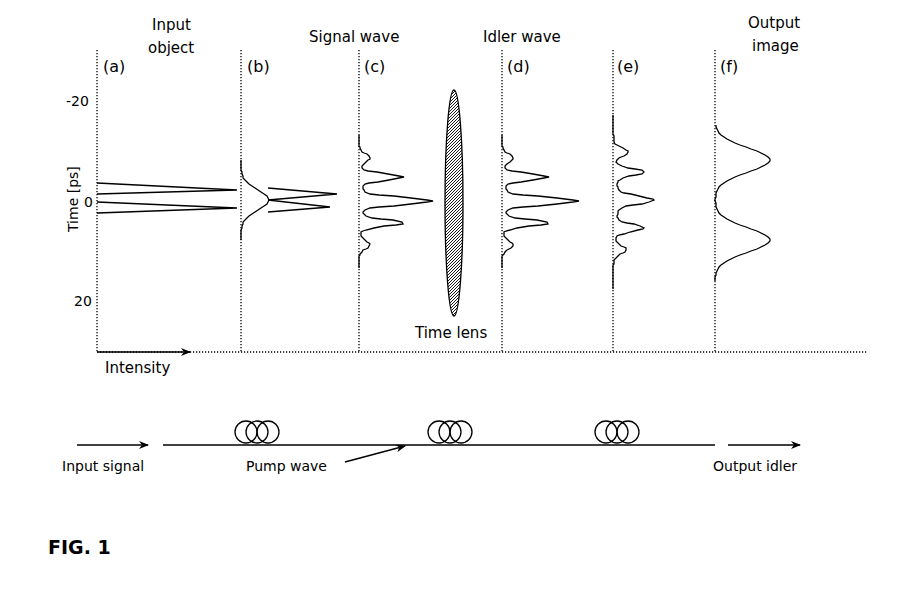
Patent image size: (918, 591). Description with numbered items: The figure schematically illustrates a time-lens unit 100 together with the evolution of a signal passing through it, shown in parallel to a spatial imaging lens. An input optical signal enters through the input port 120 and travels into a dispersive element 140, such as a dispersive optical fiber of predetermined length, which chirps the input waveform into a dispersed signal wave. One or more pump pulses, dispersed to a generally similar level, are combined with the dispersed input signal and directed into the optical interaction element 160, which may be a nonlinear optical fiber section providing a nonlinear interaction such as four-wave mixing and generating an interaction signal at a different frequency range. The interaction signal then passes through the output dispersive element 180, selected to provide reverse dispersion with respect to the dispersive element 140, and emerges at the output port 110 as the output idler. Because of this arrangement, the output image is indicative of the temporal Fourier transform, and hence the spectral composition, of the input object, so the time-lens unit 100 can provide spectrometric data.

The time-lens unit 100 is at (70, 415).
The output port 110 is at (756, 430).
The input port 120 is at (117, 421).
The dispersive element 140 is at (247, 415).
The optical interaction element 160 is at (443, 414).
The output dispersive element 180 is at (600, 415).